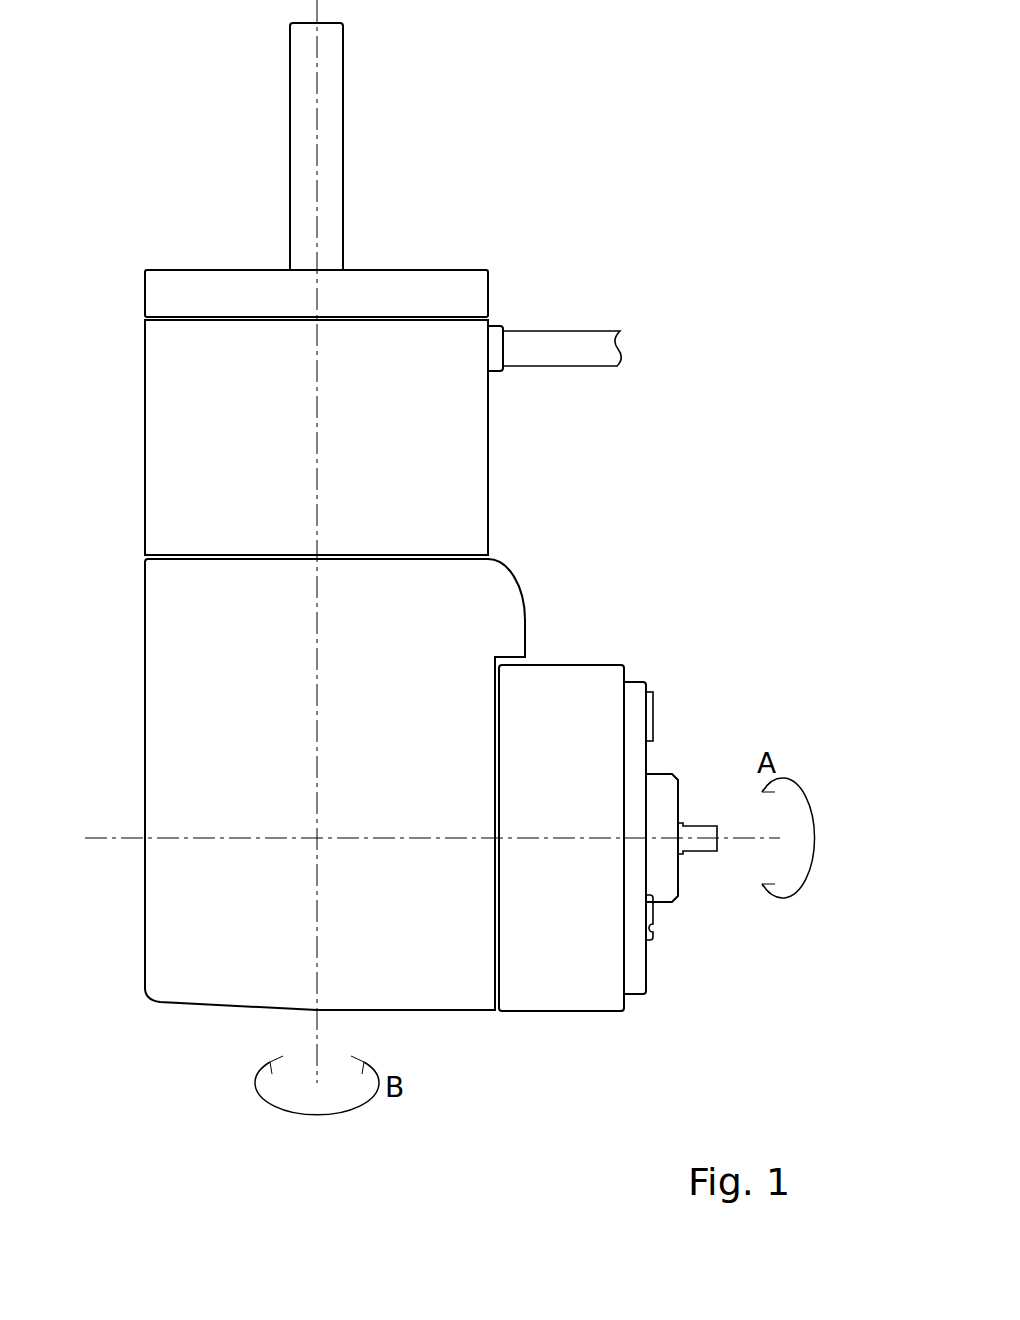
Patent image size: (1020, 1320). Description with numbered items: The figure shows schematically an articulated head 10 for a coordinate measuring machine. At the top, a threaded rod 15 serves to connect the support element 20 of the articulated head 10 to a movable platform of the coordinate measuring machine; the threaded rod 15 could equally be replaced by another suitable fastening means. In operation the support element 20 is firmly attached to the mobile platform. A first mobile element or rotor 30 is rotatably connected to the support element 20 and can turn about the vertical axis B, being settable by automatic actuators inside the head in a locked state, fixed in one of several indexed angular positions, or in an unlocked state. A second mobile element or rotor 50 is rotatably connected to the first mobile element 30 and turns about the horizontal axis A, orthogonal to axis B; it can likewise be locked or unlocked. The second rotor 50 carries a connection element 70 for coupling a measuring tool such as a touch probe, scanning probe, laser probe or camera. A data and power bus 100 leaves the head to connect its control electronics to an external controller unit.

The articulated head 10 is at (575, 150).
The threaded rod 15 is at (330, 162).
The support element 20 is at (172, 427).
The first mobile element 30 is at (473, 615).
The second mobile element 50 is at (568, 974).
The connection element 70 is at (677, 887).
The data and power bus 100 is at (571, 345).